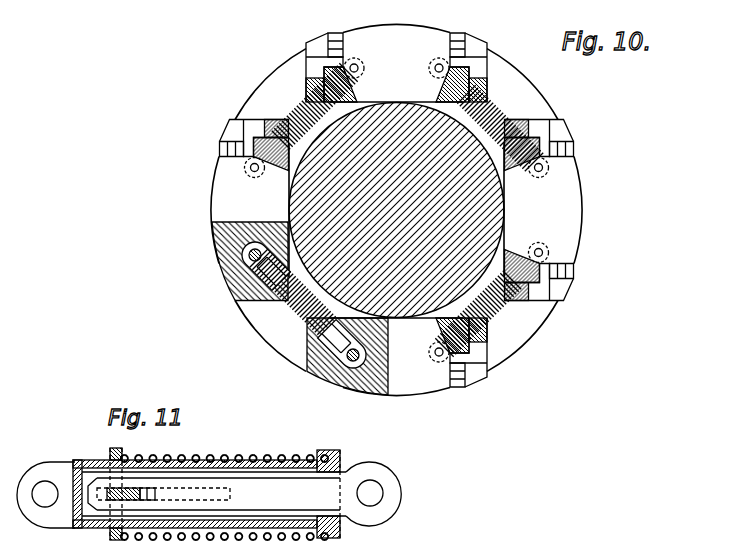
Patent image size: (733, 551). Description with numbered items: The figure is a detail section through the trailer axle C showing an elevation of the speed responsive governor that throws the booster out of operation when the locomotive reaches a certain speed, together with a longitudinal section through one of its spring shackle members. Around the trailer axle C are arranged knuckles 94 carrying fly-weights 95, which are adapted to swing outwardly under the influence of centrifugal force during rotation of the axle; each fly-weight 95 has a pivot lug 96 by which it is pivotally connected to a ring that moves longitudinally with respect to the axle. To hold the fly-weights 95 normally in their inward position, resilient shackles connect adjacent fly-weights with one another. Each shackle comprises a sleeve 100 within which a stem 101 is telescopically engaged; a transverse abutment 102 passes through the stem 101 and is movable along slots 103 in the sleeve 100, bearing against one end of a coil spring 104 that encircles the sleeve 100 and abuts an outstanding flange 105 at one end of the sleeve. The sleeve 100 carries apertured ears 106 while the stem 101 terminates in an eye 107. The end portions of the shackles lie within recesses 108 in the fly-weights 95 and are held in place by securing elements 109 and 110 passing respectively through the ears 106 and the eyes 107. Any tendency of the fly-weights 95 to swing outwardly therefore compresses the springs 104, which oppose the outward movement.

In FIG. 10, the knuckle 94 is at (478, 70).
In FIG. 10, the fly-weight 95 is at (408, 27).
In FIG. 10, the pivot lug 96 is at (335, 34).
In FIG. 10, the sleeve 100 is at (497, 108).
In FIG. 11, the sleeve 100 is at (219, 458).
In FIG. 11, the stem 101 is at (214, 494).
In FIG. 11, the transverse abutment 102 is at (141, 490).
In FIG. 11, the slot 103 is at (228, 499).
In FIG. 10, the coil spring 104 is at (292, 100).
In FIG. 11, the coil spring 104 is at (275, 448).
In FIG. 11, the outstanding flange 105 is at (337, 456).
In FIG. 10, the apertured ear 106 is at (242, 288).
In FIG. 11, the apertured ear 106 is at (45, 528).
In FIG. 10, the eye 107 is at (345, 393).
In FIG. 11, the eye 107 is at (400, 506).
In FIG. 10, the recess 108 is at (257, 262).
In FIG. 10, the securing element 109 is at (256, 175).
In FIG. 10, the securing element 110 is at (430, 68).
In FIG. 10, the trailer axle C is at (397, 102).